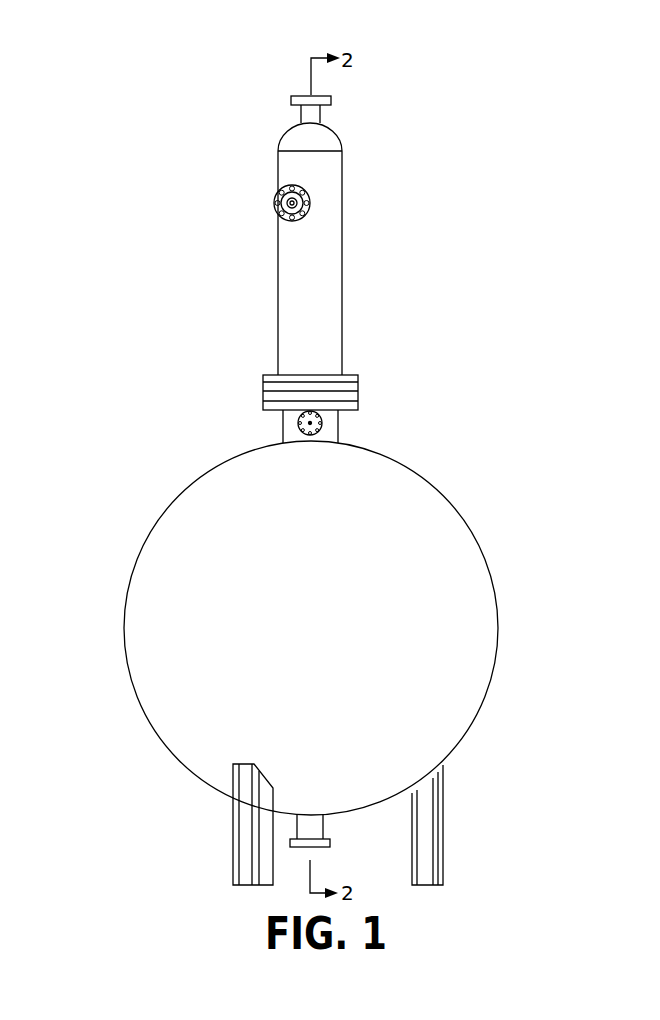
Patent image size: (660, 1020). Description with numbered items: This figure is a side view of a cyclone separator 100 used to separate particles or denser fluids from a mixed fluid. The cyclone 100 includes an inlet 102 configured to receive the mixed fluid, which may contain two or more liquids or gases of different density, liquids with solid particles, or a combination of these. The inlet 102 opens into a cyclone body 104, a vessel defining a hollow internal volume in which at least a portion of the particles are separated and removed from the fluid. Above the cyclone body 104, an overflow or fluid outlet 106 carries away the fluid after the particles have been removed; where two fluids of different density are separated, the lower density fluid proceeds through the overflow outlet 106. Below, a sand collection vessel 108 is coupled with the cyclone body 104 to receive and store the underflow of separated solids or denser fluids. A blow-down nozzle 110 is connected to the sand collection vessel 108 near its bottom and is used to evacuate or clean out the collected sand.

The cyclone separator 100 is at (442, 105).
The inlet 102 is at (274, 195).
The cyclone body 104 is at (347, 267).
The overflow outlet 106 is at (323, 97).
The sand collection vessel 108 is at (475, 530).
The blow-down nozzle 110 is at (323, 851).